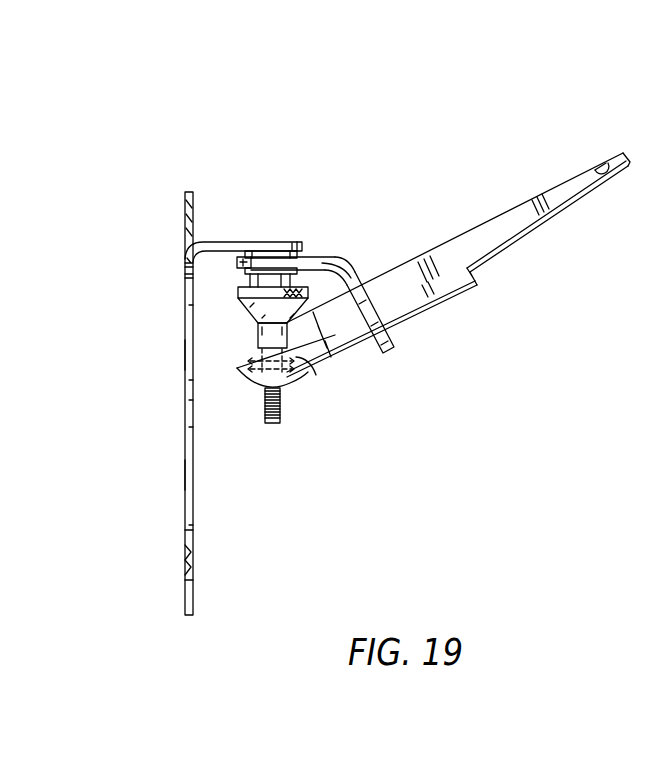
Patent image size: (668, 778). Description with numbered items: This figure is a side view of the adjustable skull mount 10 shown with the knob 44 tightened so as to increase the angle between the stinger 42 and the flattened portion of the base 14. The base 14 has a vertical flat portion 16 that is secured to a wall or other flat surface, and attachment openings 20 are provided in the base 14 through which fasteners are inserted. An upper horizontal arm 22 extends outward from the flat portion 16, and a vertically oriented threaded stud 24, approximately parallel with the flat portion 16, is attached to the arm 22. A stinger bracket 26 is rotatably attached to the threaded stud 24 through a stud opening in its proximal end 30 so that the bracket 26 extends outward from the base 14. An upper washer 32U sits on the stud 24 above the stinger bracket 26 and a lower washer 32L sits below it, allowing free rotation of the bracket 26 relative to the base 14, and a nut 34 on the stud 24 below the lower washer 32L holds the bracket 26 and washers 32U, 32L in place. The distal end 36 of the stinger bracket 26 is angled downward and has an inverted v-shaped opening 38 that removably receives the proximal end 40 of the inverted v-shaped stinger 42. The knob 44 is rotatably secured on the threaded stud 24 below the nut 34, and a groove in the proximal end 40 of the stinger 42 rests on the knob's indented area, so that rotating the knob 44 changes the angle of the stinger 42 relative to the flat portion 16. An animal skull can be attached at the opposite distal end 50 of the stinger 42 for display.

The adjustable skull mount 10 is at (458, 103).
The base 14 is at (188, 472).
The flat portion 16 is at (188, 353).
The attachment openings 20 is at (184, 213).
The upper horizontal arm 22 is at (233, 243).
The threaded stud 24 is at (272, 422).
The stinger bracket 26 is at (388, 313).
The proximal end 30 is at (237, 265).
The upper washer 32U is at (300, 257).
The lower washer 32L is at (340, 257).
The nut 34 is at (333, 292).
The distal end 36 is at (394, 351).
The inverted v-shaped opening 38 is at (369, 297).
The proximal end 40 is at (243, 370).
The inverted v-shaped stinger 42 is at (483, 236).
The knob 44 is at (302, 362).
The distal end 50 is at (626, 165).